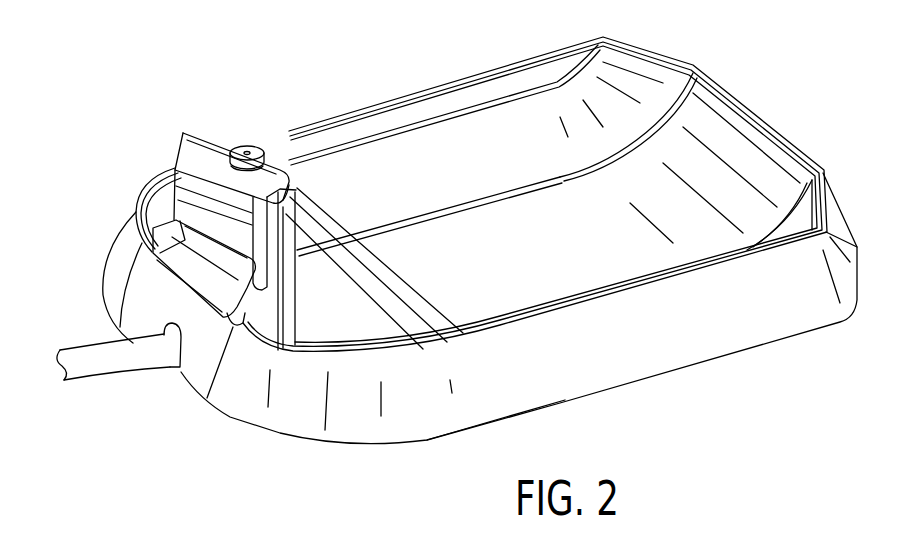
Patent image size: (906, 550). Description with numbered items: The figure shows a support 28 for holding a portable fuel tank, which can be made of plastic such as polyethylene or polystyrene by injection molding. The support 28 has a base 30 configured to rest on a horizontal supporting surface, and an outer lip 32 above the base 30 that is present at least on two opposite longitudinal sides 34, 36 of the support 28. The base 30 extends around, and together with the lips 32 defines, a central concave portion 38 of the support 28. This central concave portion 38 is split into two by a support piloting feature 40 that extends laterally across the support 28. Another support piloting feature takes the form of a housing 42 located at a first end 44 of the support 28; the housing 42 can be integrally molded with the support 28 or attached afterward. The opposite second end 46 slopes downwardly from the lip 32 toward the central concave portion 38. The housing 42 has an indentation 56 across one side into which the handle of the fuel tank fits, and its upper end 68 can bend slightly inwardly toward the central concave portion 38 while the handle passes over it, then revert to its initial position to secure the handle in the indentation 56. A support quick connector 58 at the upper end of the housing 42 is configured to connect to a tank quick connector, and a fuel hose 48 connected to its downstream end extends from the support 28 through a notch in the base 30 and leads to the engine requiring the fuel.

The support 28 is at (687, 333).
The base 30 is at (560, 403).
The outer lip 32 is at (467, 93).
The longitudinal side 34 is at (360, 105).
The longitudinal side 36 is at (783, 293).
The central concave portion 38 is at (318, 310).
The support piloting feature 40 is at (413, 320).
The housing 42 is at (197, 170).
The first end 44 is at (193, 362).
The second end 46 is at (750, 102).
The fuel hose 48 is at (92, 363).
The indentation 56 is at (202, 252).
The support quick connector 58 is at (247, 148).
The upper end 68 is at (223, 140).